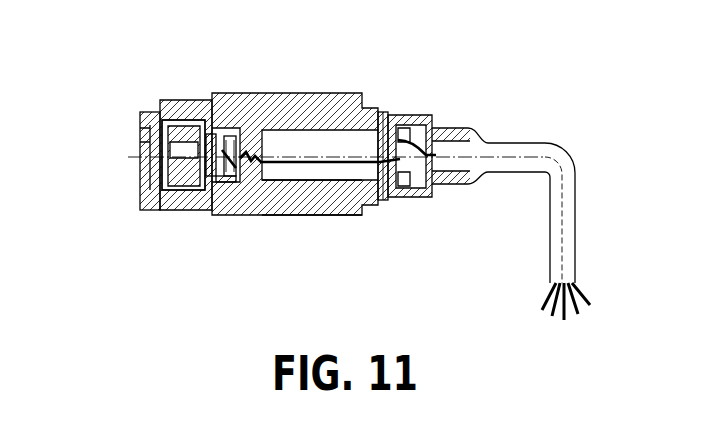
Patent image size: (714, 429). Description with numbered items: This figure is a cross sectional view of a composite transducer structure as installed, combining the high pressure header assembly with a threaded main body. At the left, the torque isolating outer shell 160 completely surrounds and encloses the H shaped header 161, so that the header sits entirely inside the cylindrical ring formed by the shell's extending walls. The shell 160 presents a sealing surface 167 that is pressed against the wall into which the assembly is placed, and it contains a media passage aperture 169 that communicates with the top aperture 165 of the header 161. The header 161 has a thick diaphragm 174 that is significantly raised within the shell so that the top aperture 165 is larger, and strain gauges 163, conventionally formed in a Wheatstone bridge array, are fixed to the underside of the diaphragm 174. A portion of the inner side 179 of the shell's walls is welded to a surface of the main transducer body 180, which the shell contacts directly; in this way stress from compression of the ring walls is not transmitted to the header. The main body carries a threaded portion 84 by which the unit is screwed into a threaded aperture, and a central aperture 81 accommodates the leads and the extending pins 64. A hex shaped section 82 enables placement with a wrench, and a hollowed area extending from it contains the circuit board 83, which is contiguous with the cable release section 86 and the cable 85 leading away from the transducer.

The extending pins 64 is at (311, 91).
The central aperture 81 is at (450, 109).
The hex shaped section 82 is at (414, 190).
The circuit board 83 is at (446, 123).
The threaded portion 84 is at (332, 117).
The cable 85 is at (563, 196).
The cable release section 86 is at (485, 138).
The torque isolating outer shell 160 is at (147, 123).
The H shaped header 161 is at (176, 236).
The strain gauges 163 is at (266, 207).
The top aperture 165 is at (166, 200).
The sealing surface 167 is at (104, 169).
The media passage aperture 169 is at (100, 155).
The thick diaphragm 174 is at (127, 133).
The inner side 179 is at (224, 100).
The main transducer body 180 is at (324, 230).